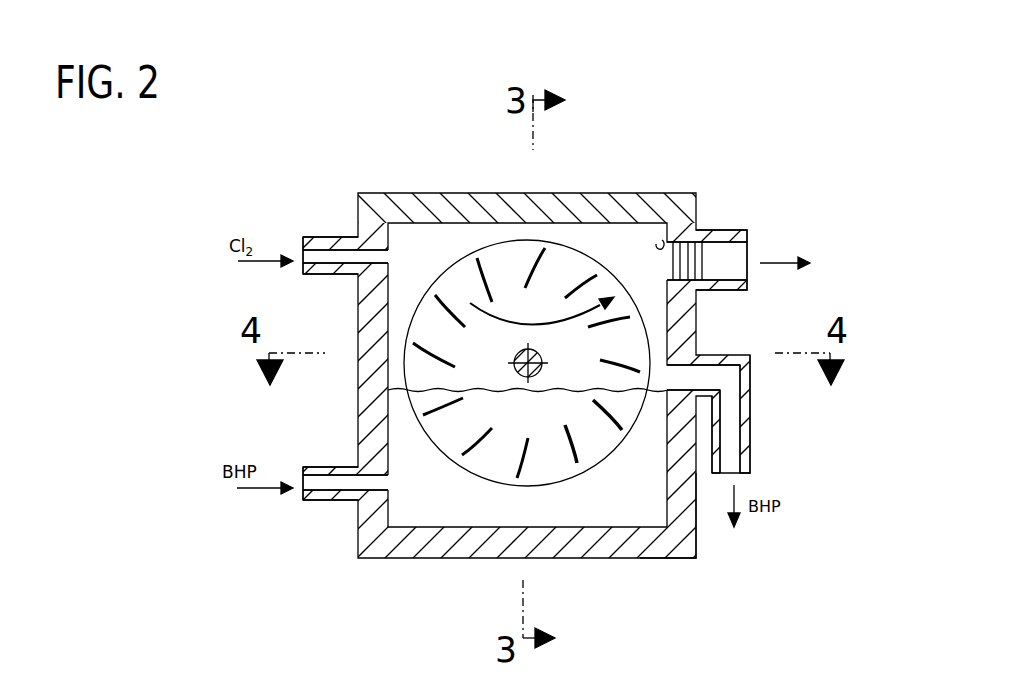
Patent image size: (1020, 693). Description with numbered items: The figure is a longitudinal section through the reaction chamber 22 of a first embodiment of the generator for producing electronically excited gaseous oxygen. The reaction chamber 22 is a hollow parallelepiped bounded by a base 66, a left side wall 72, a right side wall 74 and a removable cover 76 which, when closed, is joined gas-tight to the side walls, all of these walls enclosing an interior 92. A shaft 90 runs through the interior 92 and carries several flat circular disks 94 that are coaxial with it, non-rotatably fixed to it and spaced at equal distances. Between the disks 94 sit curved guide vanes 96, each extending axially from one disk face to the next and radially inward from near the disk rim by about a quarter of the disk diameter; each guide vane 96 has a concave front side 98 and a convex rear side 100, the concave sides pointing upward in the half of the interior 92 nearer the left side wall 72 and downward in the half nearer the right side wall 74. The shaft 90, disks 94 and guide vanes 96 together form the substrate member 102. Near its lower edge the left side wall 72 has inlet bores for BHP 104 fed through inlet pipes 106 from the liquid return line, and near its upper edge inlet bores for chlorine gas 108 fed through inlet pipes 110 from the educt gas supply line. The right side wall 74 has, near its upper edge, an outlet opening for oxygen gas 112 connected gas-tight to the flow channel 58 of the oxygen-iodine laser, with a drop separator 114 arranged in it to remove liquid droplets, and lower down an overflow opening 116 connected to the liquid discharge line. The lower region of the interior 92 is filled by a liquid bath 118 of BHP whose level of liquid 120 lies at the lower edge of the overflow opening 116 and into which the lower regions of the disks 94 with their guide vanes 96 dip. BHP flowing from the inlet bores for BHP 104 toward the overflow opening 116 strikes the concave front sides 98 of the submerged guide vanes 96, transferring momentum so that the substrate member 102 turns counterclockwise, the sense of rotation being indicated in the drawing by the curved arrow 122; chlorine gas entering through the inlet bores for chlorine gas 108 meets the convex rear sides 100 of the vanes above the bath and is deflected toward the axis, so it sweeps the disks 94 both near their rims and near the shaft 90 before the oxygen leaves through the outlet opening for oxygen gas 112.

The reaction chamber 22 is at (699, 527).
The flow channel 58 is at (745, 232).
The base 66 is at (433, 552).
The left side wall 72 is at (365, 313).
The right side wall 74 is at (683, 327).
The cover 76 is at (435, 202).
The shaft 90 is at (540, 353).
The interior 92 is at (662, 240).
The disks 94 is at (641, 240).
The guide vanes 96 is at (530, 475).
The concave front side 98 is at (575, 455).
The convex rear side 100 is at (637, 513).
The substrate member 102 is at (434, 456).
The inlet bores for BHP 104 is at (339, 500).
The inlet pipes 106 is at (310, 500).
The inlet bores for chlorine gas 108 is at (341, 247).
The inlet pipes 110 is at (312, 240).
The outlet opening for oxygen gas 112 is at (685, 240).
The drop separator 114 is at (707, 230).
The overflow opening 116 is at (737, 445).
The liquid bath 118 is at (570, 465).
The level of liquid 120 is at (672, 378).
The rotation arrow 122 is at (548, 317).